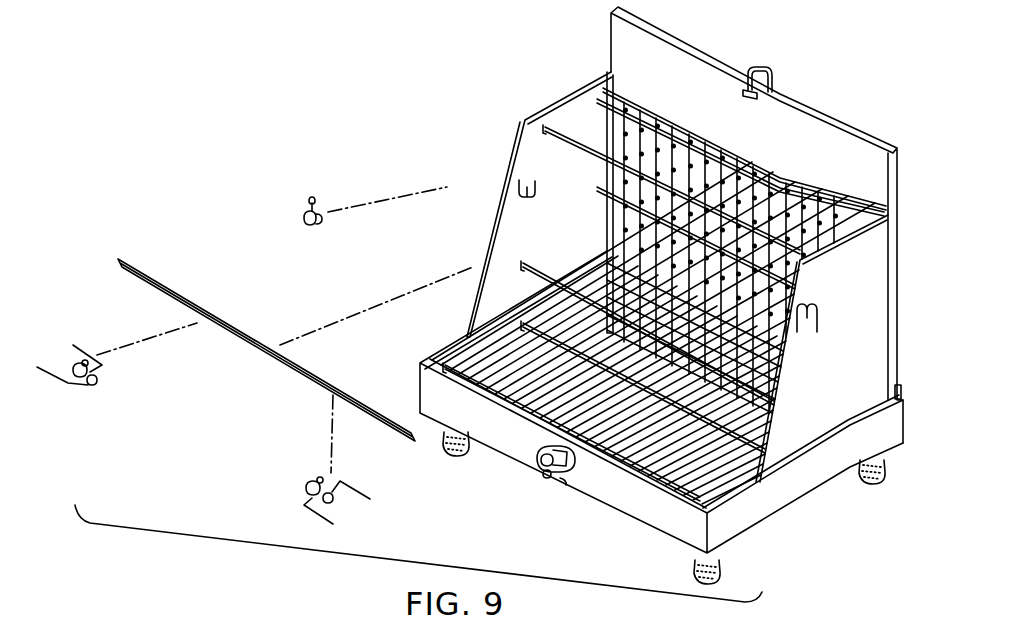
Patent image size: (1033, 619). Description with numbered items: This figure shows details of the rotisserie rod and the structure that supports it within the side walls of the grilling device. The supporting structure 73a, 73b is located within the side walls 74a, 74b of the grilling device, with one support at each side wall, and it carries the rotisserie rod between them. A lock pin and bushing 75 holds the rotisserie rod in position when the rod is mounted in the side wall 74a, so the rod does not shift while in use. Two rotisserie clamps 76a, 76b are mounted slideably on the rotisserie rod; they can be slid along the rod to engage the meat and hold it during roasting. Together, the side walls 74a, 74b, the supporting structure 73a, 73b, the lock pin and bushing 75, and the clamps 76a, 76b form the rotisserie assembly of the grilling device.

The supporting structure 73a is at (528, 194).
The supporting structure 73b is at (820, 324).
The side wall 74a is at (582, 230).
The side wall 74b is at (872, 288).
The lock pin and bushing 75 is at (302, 214).
The rotisserie clamp 76a is at (86, 390).
The rotisserie clamp 76b is at (304, 489).